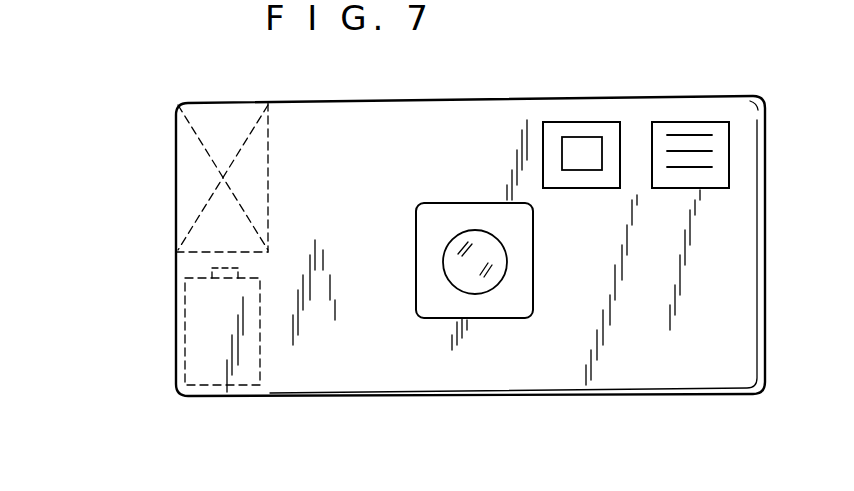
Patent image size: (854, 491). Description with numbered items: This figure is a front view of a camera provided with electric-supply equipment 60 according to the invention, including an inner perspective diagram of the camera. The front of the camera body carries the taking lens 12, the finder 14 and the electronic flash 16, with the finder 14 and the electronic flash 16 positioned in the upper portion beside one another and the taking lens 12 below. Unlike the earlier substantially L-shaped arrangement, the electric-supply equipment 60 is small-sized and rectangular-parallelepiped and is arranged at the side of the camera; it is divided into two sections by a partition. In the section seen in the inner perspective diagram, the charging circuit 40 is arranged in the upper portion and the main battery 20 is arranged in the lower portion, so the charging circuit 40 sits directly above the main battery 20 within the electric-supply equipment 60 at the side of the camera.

The taking lens 12 is at (487, 237).
The finder 14 is at (582, 148).
The electronic flash 16 is at (686, 122).
The main battery 20 is at (205, 338).
The charging circuit 40 is at (190, 167).
The electric-supply equipment 60 is at (172, 250).